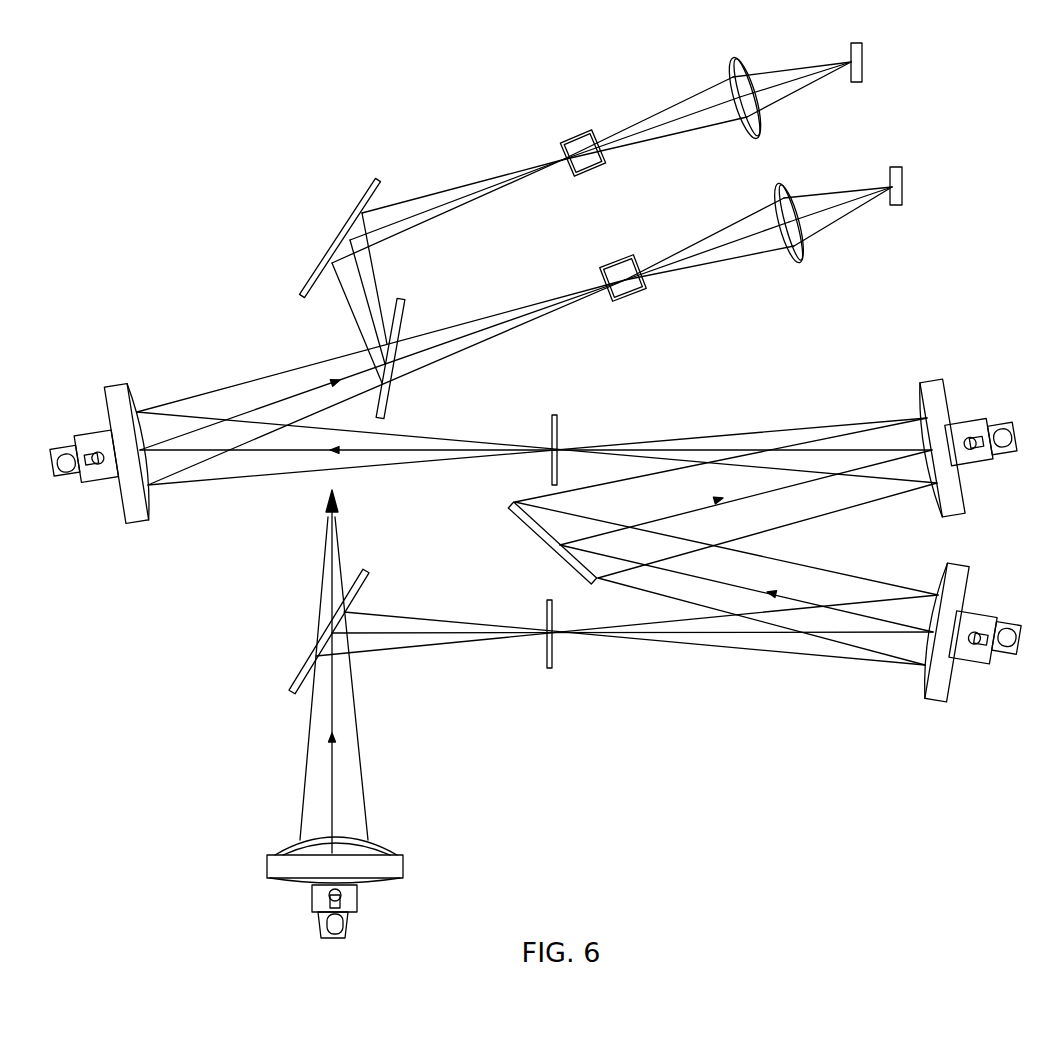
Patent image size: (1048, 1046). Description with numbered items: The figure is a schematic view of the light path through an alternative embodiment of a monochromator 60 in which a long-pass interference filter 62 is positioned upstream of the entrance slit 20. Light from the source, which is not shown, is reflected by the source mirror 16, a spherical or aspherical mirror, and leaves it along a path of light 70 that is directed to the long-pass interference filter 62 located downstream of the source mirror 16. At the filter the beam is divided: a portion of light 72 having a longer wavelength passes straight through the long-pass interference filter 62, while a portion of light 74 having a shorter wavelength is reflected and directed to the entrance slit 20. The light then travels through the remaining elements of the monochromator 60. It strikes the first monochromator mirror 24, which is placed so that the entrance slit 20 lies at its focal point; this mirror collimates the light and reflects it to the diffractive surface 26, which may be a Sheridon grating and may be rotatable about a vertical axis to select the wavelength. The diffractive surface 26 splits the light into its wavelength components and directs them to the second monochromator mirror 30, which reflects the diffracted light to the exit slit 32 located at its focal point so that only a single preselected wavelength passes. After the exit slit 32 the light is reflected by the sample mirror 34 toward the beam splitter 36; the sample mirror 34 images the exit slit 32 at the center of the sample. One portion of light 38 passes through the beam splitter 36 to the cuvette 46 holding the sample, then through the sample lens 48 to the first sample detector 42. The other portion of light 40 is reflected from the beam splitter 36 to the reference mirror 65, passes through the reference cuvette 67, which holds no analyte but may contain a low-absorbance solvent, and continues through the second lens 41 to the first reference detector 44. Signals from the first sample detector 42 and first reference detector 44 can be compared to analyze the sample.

The source mirror 16 is at (405, 860).
The entrance slit 20 is at (550, 668).
The first monochromator mirror 24 is at (948, 700).
The diffractive surface 26 is at (533, 520).
The second monochromator mirror 30 is at (945, 396).
The exit slit 32 is at (553, 425).
The sample mirror 34 is at (120, 392).
The beam splitter 36 is at (405, 300).
The portion of light 38 is at (541, 312).
The portion of light 40 is at (437, 193).
The second lens 41 is at (742, 123).
The first sample detector 42 is at (900, 205).
The first reference detector 44 is at (860, 82).
The cuvette 46 is at (600, 268).
The sample lens 48 is at (793, 262).
The monochromator 60 is at (192, 722).
The long-pass interference filter 62 is at (290, 688).
The reference mirror 65 is at (303, 292).
The reference cuvette 67 is at (560, 146).
The path of light 70 is at (334, 728).
The portion of light 72 is at (327, 542).
The portion of light 74 is at (373, 637).